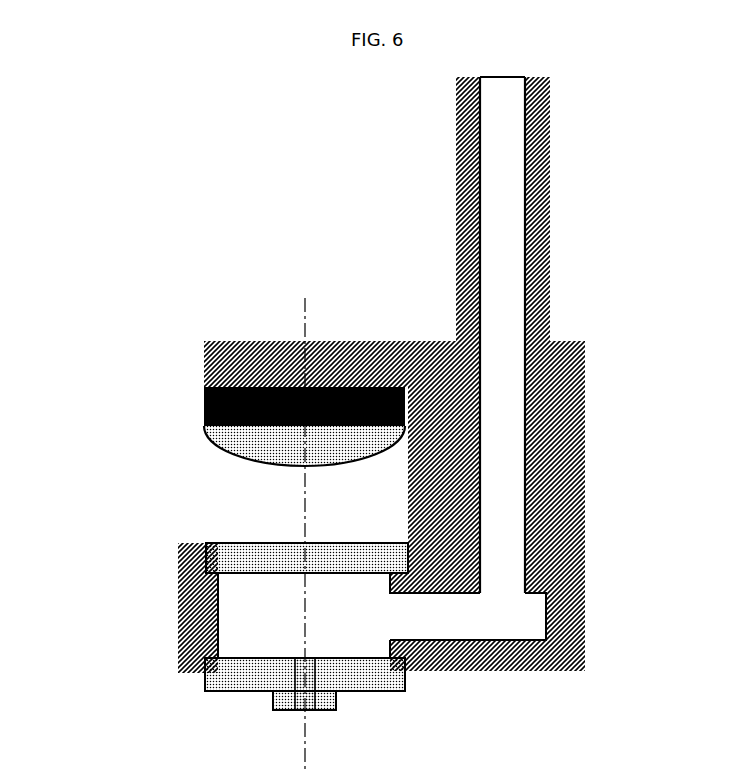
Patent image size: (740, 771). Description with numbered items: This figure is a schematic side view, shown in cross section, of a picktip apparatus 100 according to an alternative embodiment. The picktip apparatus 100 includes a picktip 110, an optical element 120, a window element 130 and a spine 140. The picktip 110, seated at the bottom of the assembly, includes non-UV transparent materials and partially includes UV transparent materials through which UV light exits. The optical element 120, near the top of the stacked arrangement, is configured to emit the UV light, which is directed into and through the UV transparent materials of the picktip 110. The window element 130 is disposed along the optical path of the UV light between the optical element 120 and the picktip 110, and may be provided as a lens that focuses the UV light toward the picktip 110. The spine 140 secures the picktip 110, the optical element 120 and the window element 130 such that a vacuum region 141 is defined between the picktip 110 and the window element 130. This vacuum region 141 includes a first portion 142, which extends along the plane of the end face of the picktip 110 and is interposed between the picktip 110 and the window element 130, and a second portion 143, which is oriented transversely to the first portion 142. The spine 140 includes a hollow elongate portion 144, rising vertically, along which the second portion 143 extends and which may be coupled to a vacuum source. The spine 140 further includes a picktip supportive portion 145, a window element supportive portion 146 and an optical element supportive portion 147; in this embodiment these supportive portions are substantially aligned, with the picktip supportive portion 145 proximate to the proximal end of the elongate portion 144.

The picktip apparatus 100 is at (556, 138).
The picktip 110 is at (197, 681).
The optical element 120 is at (200, 413).
The window element 130 is at (208, 557).
The spine 140 is at (425, 333).
The vacuum region 141 is at (516, 622).
The first portion 142 is at (301, 622).
The second portion 143 is at (501, 353).
The elongate portion 144 is at (534, 273).
The picktip supportive portion 145 is at (180, 660).
The window element supportive portion 146 is at (178, 574).
The optical element supportive portion 147 is at (207, 358).